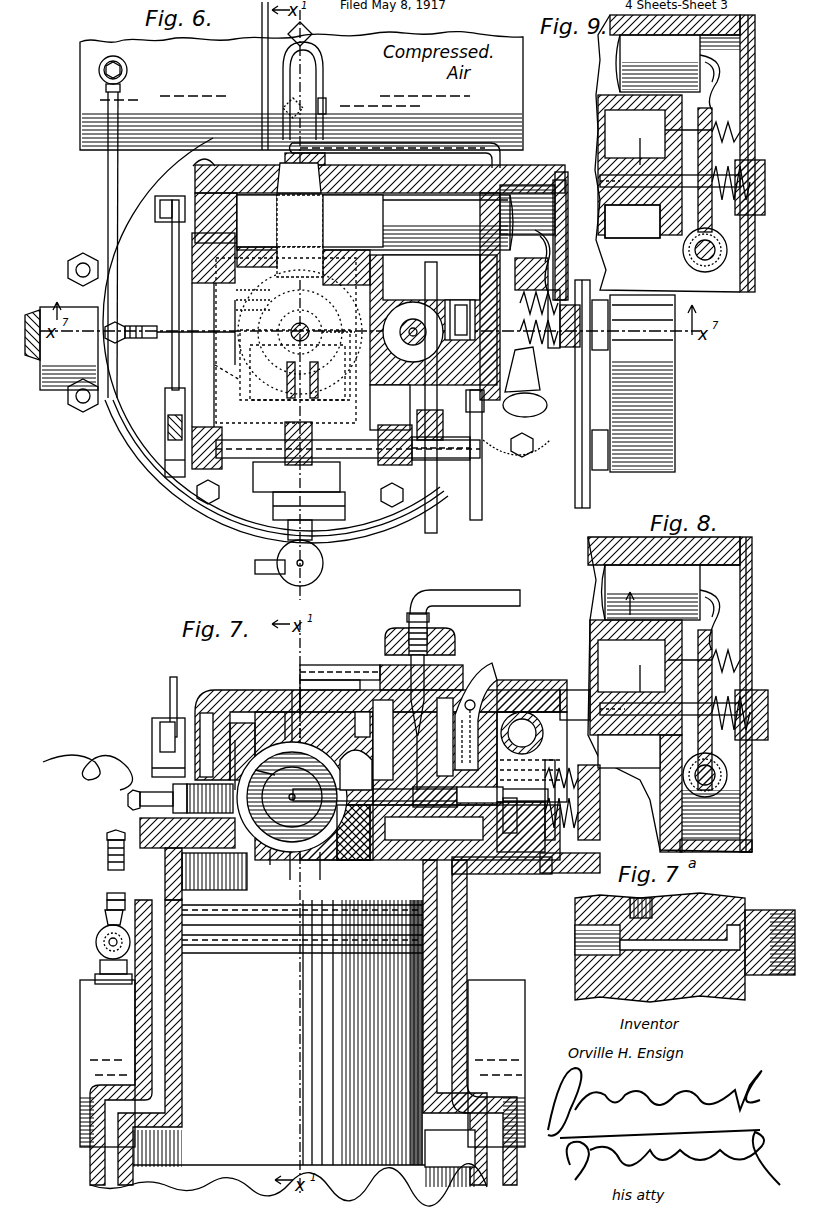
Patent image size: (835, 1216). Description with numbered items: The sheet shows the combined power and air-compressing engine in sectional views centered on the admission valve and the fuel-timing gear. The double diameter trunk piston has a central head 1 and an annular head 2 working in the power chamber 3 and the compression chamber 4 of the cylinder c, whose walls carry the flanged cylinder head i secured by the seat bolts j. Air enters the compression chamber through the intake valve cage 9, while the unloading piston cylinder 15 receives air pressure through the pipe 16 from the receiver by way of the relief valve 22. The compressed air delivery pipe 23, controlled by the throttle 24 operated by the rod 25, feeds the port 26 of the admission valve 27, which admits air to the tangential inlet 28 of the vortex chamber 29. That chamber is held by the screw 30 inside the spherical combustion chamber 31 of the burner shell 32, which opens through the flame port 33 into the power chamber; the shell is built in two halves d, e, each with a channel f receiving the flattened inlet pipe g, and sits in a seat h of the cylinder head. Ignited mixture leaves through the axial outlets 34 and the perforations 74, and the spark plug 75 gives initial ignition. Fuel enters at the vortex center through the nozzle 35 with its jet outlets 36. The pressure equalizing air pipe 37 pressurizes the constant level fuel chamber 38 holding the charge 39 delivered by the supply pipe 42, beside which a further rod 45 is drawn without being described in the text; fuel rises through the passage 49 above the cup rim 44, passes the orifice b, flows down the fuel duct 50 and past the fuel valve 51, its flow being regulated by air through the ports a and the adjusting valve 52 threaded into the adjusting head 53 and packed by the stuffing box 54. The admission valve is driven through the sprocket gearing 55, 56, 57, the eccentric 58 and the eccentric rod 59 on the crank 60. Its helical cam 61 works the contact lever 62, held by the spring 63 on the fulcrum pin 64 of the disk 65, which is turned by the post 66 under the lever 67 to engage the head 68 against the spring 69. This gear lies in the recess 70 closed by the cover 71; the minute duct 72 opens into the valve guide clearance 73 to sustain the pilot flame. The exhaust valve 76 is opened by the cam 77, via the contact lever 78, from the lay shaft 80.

In FIG. 7, the central head 1 is at (372, 890).
In FIG. 7, the annular head 2 is at (437, 1166).
In FIG. 7, the power chamber 3 is at (440, 883).
In FIG. 7, the compression chamber 4 is at (460, 1153).
In FIG. 6, the intake valve cage 9 is at (264, 583).
In FIG. 6, the cylinder 15 is at (322, 545).
In FIG. 6, the pipe 16 is at (107, 179).
In FIG. 7, the pipe 16 is at (104, 935).
In FIG. 6, the relief valve 22 is at (128, 72).
In FIG. 7, the relief valve 22 is at (97, 948).
In FIG. 6, the compressed air delivery pipe 23 is at (312, 72).
In FIG. 6, the throttle 24 is at (328, 108).
In FIG. 6, the rod 25 is at (261, 52).
In FIG. 6, the port 26 is at (299, 178).
In FIG. 6, the admission valve 27 is at (375, 222).
In FIG. 9, the admission valve 27 is at (635, 62).
In FIG. 8, the admission valve 27 is at (615, 590).
In FIG. 7, the admission valve 27 is at (564, 698).
In FIG. 6, the inlet 28 is at (312, 262).
In FIG. 7, the inlet 28 is at (284, 722).
In FIG. 6, the vortex chamber 29 is at (352, 240).
In FIG. 7, the vortex chamber 29 is at (322, 872).
In FIG. 6, the screw 30 is at (296, 326).
In FIG. 7, the screw 30 is at (298, 690).
In FIG. 6, the spherical combustion chamber 31 is at (214, 376).
In FIG. 7, the spherical combustion chamber 31 is at (268, 770).
In FIG. 6, the burner shell 32 is at (233, 292).
In FIG. 7, the burner shell 32 is at (243, 745).
In FIG. 6, the flame port 33 is at (297, 375).
In FIG. 7, the flame port 33 is at (287, 868).
In FIG. 6, the axial outlets 34 is at (298, 365).
In FIG. 7, the axial outlets 34 is at (262, 830).
In FIG. 7, the nozzle 35 is at (290, 805).
In FIG. 7, the jet outlets 36 is at (292, 760).
In FIG. 6, the pressure equalizing air pipe 37 is at (410, 142).
In FIG. 7, the pressure equalizing air pipe 37 is at (306, 680).
In FIG. 6, the constant level fuel chamber 38 is at (418, 304).
In FIG. 7, the constant level fuel chamber 38 is at (380, 708).
In FIG. 7, the charge of liquid fuel 39 is at (473, 700).
In FIG. 6, the supply pipe 42 is at (432, 522).
In FIG. 6, the cup rim 44 is at (462, 303).
In FIG. 7, the cup rim 44 is at (530, 680).
In FIG. 6, the rod 45 is at (486, 510).
In FIG. 6, the passage 49 is at (410, 330).
In FIG. 7, the passage 49 is at (368, 713).
In FIG. 6, the fuel duct 50 is at (395, 300).
In FIG. 7, the fuel duct 50 is at (356, 764).
In FIG. 6, the fuel valve 51 is at (531, 274).
In FIG. 9, the fuel valve 51 is at (632, 180).
In FIG. 8, the fuel valve 51 is at (634, 708).
In FIG. 7A, the fuel valve 51 is at (622, 978).
In FIG. 7, the fuel valve 51 is at (525, 845).
In FIG. 7, the adjusting valve 52 is at (470, 590).
In FIG. 7, the adjusting head 53 is at (386, 641).
In FIG. 7, the stuffing box 54 is at (408, 640).
In FIG. 6, the sprocket gearing 55 is at (597, 298).
In FIG. 6, the sprocket gearing 56 is at (583, 397).
In FIG. 6, the sprocket gearing 57 is at (590, 478).
In FIG. 6, the eccentric 58 is at (165, 420).
In FIG. 6, the eccentric rod 59 is at (171, 260).
In FIG. 7, the eccentric rod 59 is at (170, 697).
In FIG. 6, the crank 60 is at (163, 196).
In FIG. 7, the crank 60 is at (157, 742).
In FIG. 6, the helical cam 61 is at (536, 226).
In FIG. 9, the helical cam 61 is at (720, 75).
In FIG. 8, the helical cam 61 is at (690, 600).
In FIG. 7, the helical cam 61 is at (545, 748).
In FIG. 6, the contact lever 62 is at (550, 300).
In FIG. 9, the contact lever 62 is at (714, 112).
In FIG. 8, the contact lever 62 is at (715, 640).
In FIG. 7, the contact lever 62 is at (556, 808).
In FIG. 6, the spring 63 is at (556, 330).
In FIG. 9, the spring 63 is at (740, 150).
In FIG. 8, the spring 63 is at (740, 655).
In FIG. 7, the spring 63 is at (572, 780).
In FIG. 9, the fulcrum pin 64 is at (632, 221).
In FIG. 8, the fulcrum pin 64 is at (629, 751).
In FIG. 9, the disk 65 is at (730, 232).
In FIG. 8, the disk 65 is at (693, 783).
In FIG. 9, the post 66 is at (712, 253).
In FIG. 8, the post 66 is at (712, 777).
In FIG. 6, the lever 67 is at (518, 402).
In FIG. 6, the head 68 is at (568, 298).
In FIG. 9, the head 68 is at (722, 202).
In FIG. 8, the head 68 is at (725, 695).
In FIG. 7, the head 68 is at (562, 822).
In FIG. 6, the spring 69 is at (580, 328).
In FIG. 9, the spring 69 is at (765, 165).
In FIG. 8, the spring 69 is at (768, 738).
In FIG. 7, the spring 69 is at (582, 805).
In FIG. 6, the recess 70 is at (541, 185).
In FIG. 9, the recess 70 is at (735, 48).
In FIG. 8, the recess 70 is at (720, 560).
In FIG. 7, the recess 70 is at (505, 855).
In FIG. 6, the cover 71 is at (560, 170).
In FIG. 9, the cover 71 is at (748, 80).
In FIG. 8, the cover 71 is at (752, 582).
In FIG. 7, the cover 71 is at (573, 858).
In FIG. 9, the minute duct 72 is at (625, 178).
In FIG. 8, the minute duct 72 is at (630, 706).
In FIG. 7A, the minute duct 72 is at (740, 900).
In FIG. 7, the minute duct 72 is at (420, 813).
In FIG. 9, the valve guide clearance 73 is at (650, 144).
In FIG. 8, the valve guide clearance 73 is at (650, 671).
In FIG. 7A, the valve guide clearance 73 is at (768, 895).
In FIG. 7, the valve guide clearance 73 is at (479, 813).
In FIG. 7, the perforations 74 is at (270, 855).
In FIG. 6, the spark plug 75 is at (143, 314).
In FIG. 7, the spark plug 75 is at (119, 807).
In FIG. 6, the exhaust valve 76 is at (270, 494).
In FIG. 6, the cam 77 is at (306, 444).
In FIG. 6, the contact lever 78 is at (299, 393).
In FIG. 6, the lay shaft 80 is at (462, 462).
In FIG. 7, the air ports a is at (450, 728).
In FIG. 6, the orifice b is at (390, 407).
In FIG. 7, the orifice b is at (445, 737).
In FIG. 6, the cylinder c is at (367, 406).
In FIG. 7, the cylinder c is at (470, 942).
In FIG. 6, the burner shell half d is at (338, 317).
In FIG. 7, the burner shell half d is at (285, 688).
In FIG. 6, the burner shell half e is at (289, 340).
In FIG. 7, the burner shell half e is at (218, 722).
In FIG. 6, the channel f is at (332, 268).
In FIG. 7, the channel f is at (319, 676).
In FIG. 6, the inlet pipe g is at (286, 268).
In FIG. 6, the seat h is at (252, 245).
In FIG. 7, the seat h is at (213, 905).
In FIG. 6, the cylinder head i is at (236, 162).
In FIG. 7, the cylinder head i is at (214, 700).
In FIG. 6, the seat bolts j is at (204, 162).
In FIG. 7, the seat bolts j is at (105, 834).